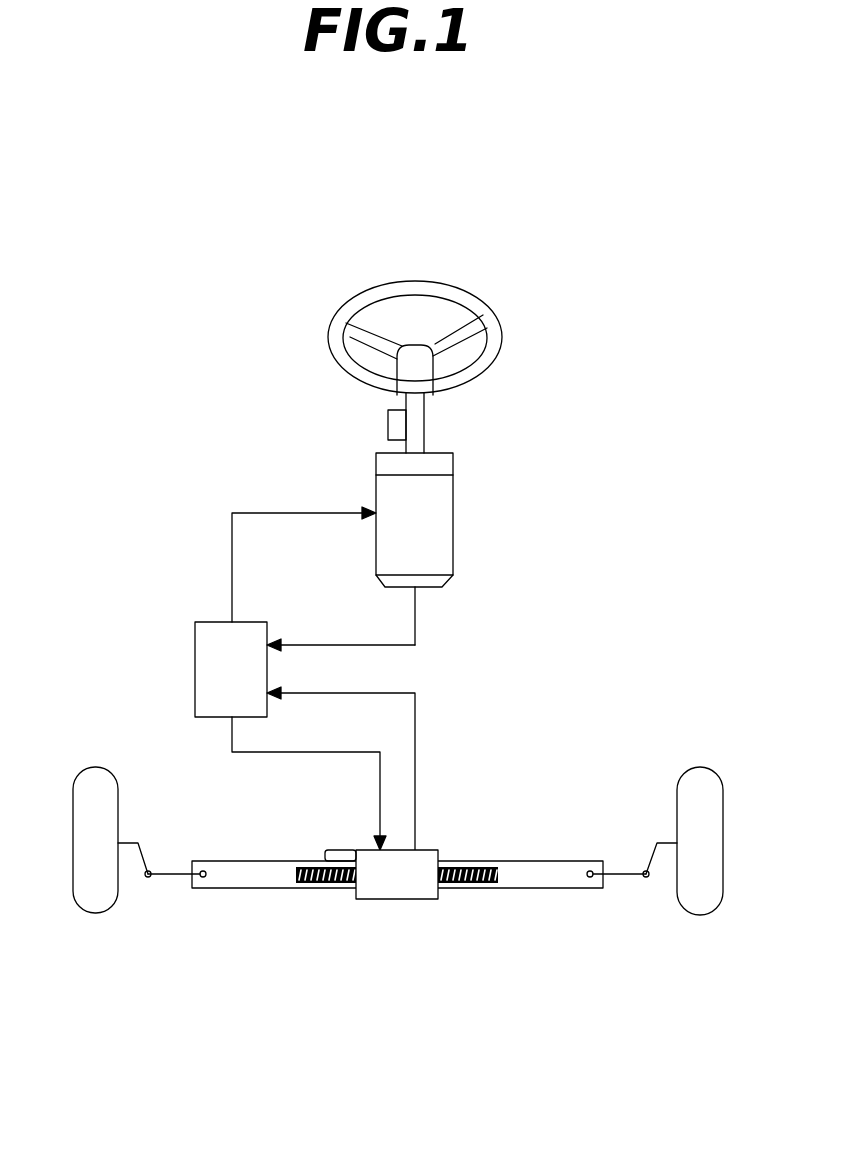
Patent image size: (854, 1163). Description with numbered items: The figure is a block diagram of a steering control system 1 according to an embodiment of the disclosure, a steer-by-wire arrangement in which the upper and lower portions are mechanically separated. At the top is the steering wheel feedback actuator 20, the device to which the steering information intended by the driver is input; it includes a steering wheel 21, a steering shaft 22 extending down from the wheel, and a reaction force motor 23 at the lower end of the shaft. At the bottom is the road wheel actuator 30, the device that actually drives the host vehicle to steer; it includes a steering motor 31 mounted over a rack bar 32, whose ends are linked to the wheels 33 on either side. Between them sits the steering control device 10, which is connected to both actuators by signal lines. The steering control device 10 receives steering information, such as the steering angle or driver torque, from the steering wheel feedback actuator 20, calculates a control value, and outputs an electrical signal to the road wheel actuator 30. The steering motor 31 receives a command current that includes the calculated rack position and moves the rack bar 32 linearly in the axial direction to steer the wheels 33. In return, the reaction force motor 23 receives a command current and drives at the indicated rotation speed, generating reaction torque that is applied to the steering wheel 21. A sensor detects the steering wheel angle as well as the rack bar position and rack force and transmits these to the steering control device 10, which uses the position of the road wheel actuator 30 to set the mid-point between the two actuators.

The steering control system 1 is at (129, 238).
The steering control device 10 is at (195, 668).
The steering wheel feedback actuator 20 is at (518, 278).
The steering wheel 21 is at (415, 287).
The steering shaft 22 is at (453, 511).
The reaction force motor 23 is at (426, 588).
The road wheel actuator 30 is at (436, 920).
The steering motor 31 is at (396, 900).
The rack bar 32 is at (271, 889).
The wheels 33 is at (90, 915).